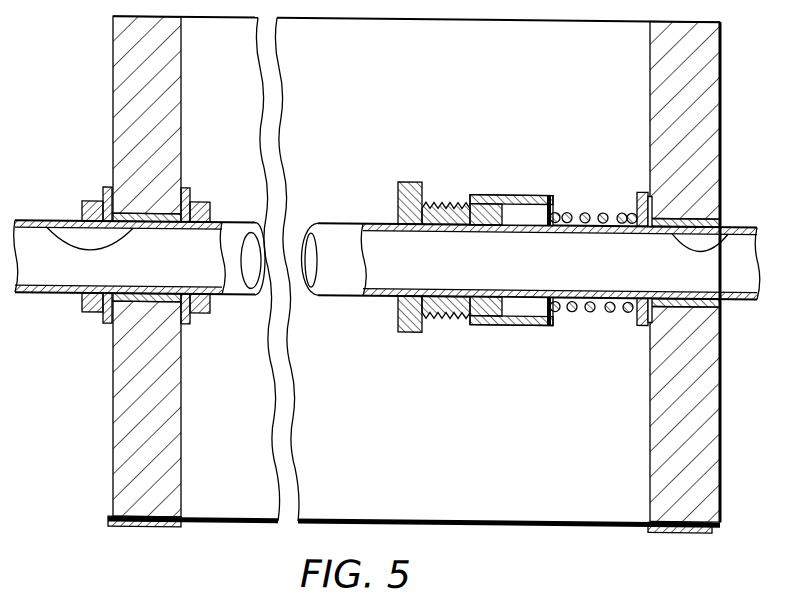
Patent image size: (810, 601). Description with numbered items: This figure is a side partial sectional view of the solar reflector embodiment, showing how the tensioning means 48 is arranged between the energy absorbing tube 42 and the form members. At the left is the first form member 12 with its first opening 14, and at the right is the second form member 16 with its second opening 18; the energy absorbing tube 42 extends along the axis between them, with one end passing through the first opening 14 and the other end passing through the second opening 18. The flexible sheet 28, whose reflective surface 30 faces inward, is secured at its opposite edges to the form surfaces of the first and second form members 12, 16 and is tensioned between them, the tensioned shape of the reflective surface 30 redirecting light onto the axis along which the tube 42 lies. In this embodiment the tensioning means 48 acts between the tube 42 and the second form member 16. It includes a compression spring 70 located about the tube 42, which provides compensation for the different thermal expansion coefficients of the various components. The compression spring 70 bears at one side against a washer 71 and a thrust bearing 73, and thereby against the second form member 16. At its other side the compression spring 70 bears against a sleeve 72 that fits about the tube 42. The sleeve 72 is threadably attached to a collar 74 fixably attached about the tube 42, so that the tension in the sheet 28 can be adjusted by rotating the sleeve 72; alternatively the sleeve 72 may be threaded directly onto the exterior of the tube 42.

The first form member 12 is at (122, 96).
The first opening 14 is at (48, 233).
The second form member 16 is at (700, 113).
The second opening 18 is at (732, 225).
The flexible sheet 28 is at (514, 528).
The reflective surface 30 is at (245, 480).
The energy absorbing tube 42 is at (340, 232).
The tensioning means 48 is at (561, 249).
The compression spring 70 is at (587, 204).
The washer 71 is at (636, 312).
The sleeve 72 is at (517, 190).
The thrust bearing 73 is at (641, 322).
The collar 74 is at (410, 178).